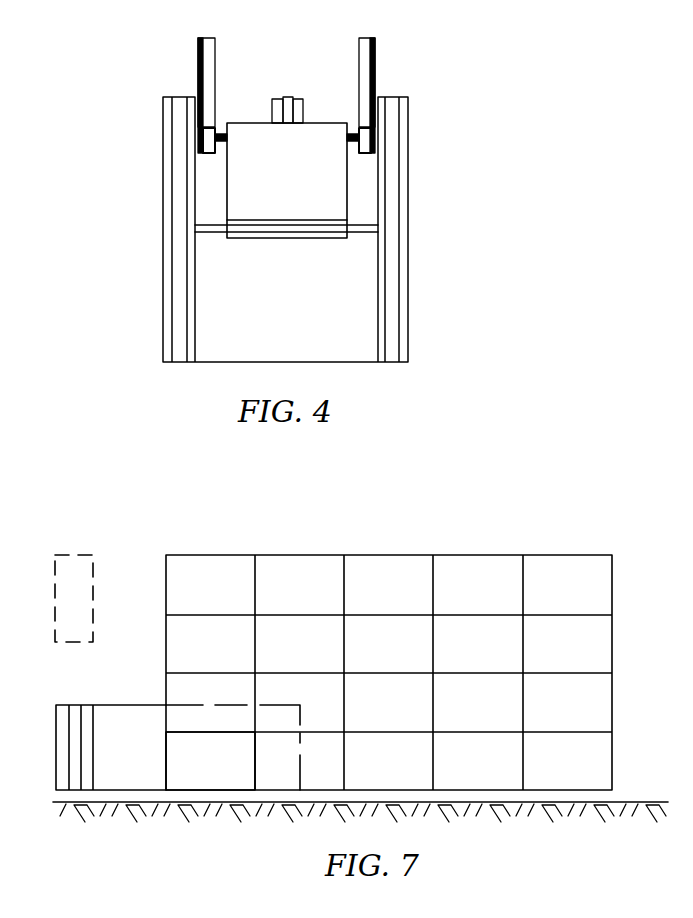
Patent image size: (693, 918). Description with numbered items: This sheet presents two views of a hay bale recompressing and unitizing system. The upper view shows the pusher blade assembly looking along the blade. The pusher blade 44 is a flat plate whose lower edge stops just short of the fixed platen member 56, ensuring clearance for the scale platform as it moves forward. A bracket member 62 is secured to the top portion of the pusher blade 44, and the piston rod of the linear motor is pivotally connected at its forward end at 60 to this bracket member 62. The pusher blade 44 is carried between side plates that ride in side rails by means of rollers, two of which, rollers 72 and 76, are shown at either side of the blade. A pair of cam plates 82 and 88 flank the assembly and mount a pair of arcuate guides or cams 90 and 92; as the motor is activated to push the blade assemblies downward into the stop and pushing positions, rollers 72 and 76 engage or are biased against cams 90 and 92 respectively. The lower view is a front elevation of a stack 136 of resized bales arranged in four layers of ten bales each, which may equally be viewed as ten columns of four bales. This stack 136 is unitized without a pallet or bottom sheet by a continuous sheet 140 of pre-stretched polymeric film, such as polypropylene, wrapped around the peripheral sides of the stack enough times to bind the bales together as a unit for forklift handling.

In FIG. 4, the pusher blade 44 is at (265, 213).
In FIG. 4, the platen member 56 is at (330, 228).
In FIG. 4, the pivotal connection 60 is at (272, 110).
In FIG. 4, the bracket member 62 is at (288, 97).
In FIG. 4, the roller 72 is at (208, 147).
In FIG. 4, the roller 76 is at (352, 143).
In FIG. 4, the cam plate 82 is at (198, 60).
In FIG. 4, the cam plate 88 is at (375, 66).
In FIG. 4, the arcuate guide or cam 90 is at (215, 68).
In FIG. 4, the arcuate guide or cam 92 is at (359, 60).
In FIG. 7, the stack 136 is at (383, 543).
In FIG. 7, the continuous sheet of polymeric film 140 is at (207, 765).